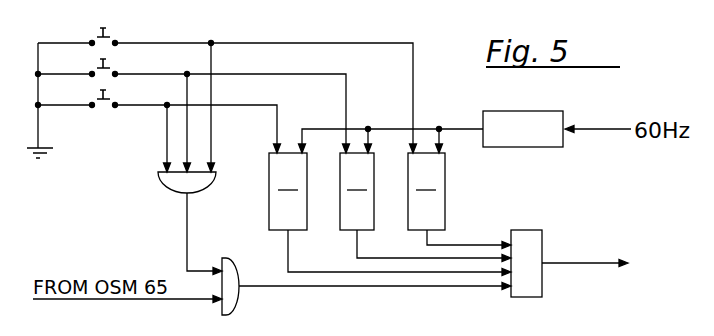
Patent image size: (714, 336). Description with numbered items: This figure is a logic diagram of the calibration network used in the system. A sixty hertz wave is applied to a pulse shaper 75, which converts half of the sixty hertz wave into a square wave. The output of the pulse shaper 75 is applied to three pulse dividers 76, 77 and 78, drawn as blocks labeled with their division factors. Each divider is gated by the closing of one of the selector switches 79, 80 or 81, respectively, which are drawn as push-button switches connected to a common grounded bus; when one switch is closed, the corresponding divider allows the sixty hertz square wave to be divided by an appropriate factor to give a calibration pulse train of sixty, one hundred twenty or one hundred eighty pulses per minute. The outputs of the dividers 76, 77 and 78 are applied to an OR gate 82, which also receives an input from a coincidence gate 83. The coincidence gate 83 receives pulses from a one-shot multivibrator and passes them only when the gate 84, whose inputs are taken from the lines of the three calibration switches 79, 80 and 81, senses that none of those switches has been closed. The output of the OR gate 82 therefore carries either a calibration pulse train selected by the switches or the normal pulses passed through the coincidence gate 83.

The pulse shaper 75 is at (560, 111).
The pulse divider 76 is at (270, 230).
The pulse divider 77 is at (339, 229).
The pulse divider 78 is at (408, 225).
The selector switch 79 is at (118, 101).
The selector switch 80 is at (118, 70).
The selector switch 81 is at (118, 39).
The OR gate 82 is at (545, 251).
The coincidence gate 83 is at (233, 302).
The gate 84 is at (169, 192).